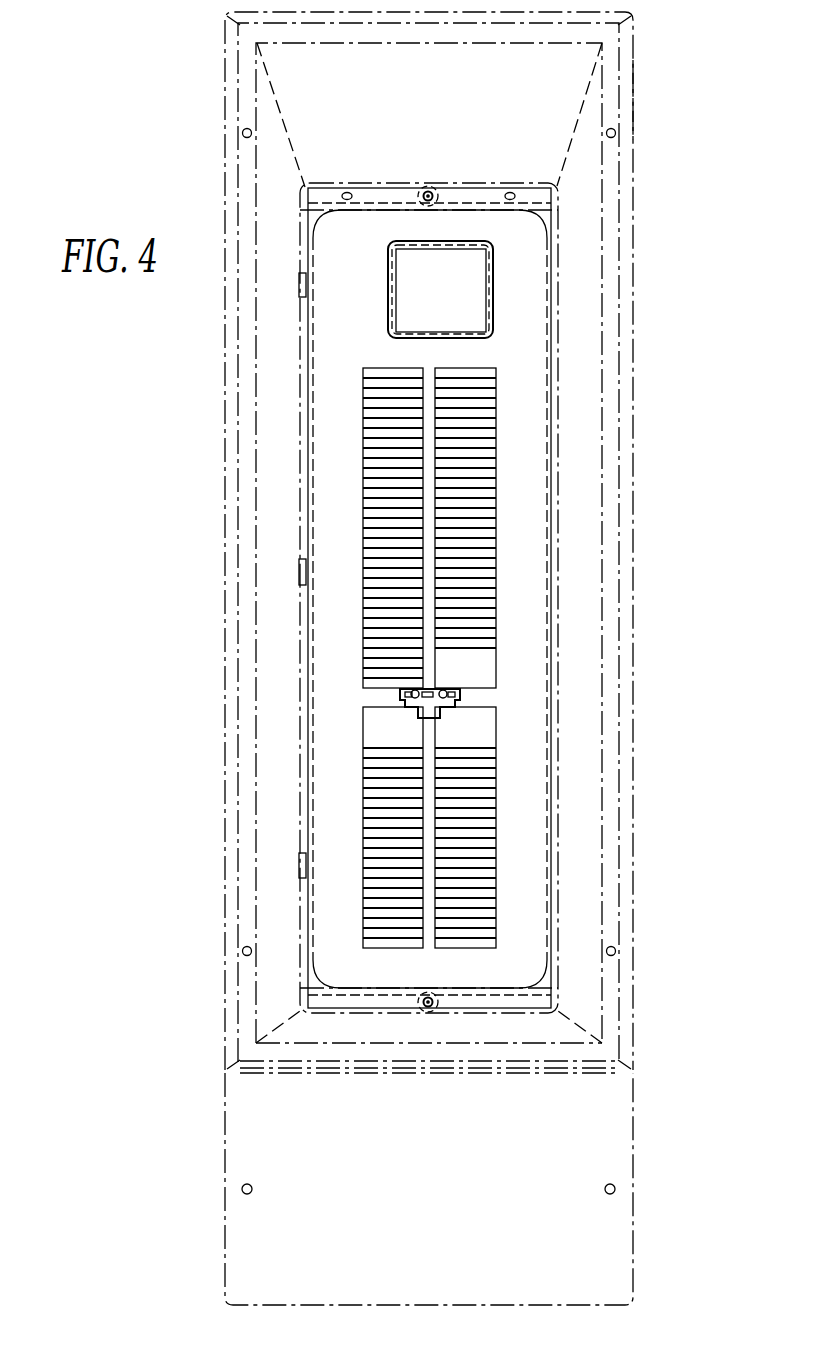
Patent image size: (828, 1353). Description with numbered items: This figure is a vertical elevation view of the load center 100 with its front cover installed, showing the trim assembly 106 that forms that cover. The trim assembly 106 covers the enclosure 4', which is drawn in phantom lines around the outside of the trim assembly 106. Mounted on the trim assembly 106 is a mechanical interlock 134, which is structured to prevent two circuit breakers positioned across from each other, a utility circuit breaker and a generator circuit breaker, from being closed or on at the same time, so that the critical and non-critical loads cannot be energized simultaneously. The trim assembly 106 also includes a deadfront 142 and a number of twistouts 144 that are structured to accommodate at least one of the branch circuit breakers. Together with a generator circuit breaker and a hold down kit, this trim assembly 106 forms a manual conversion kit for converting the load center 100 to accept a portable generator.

The enclosure 4' is at (670, 100).
The load center 100 is at (676, 651).
The trim assembly 106 is at (525, 795).
The mechanical interlock 134 is at (437, 705).
The deadfront 142 is at (383, 722).
The twistouts 144 is at (398, 737).